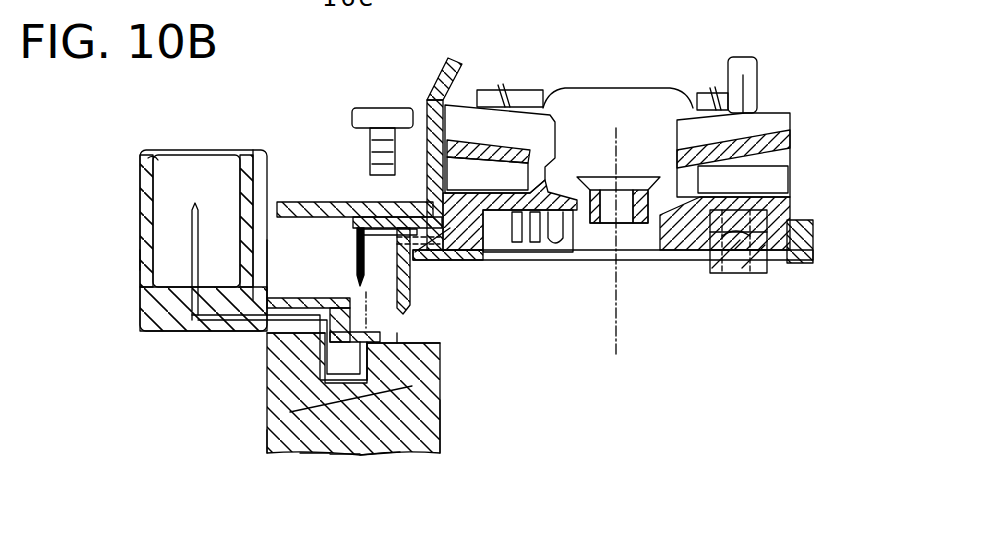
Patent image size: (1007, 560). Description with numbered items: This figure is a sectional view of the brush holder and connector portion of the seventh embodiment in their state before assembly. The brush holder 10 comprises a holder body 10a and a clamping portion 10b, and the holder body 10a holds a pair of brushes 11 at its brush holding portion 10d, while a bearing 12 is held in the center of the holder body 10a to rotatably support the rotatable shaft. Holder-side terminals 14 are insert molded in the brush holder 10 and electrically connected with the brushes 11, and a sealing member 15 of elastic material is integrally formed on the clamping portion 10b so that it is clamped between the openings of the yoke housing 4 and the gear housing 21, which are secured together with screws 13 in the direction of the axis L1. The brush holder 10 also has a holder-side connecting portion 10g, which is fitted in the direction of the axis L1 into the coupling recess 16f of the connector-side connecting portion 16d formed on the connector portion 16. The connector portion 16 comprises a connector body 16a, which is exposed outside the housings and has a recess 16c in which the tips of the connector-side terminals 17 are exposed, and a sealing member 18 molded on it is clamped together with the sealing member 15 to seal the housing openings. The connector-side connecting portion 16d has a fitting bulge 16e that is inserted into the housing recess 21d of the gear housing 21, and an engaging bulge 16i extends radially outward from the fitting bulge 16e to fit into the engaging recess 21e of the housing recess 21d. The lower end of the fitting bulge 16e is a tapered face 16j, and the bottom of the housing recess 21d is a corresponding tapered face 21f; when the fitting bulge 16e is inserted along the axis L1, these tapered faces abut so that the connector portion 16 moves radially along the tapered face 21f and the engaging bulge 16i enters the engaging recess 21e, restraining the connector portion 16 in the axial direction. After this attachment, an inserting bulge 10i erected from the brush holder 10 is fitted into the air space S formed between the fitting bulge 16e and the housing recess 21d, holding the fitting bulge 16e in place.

The yoke housing 4 is at (428, 104).
The brush holder 10 is at (758, 56).
The holder body 10a is at (782, 136).
The clamping portion 10b is at (808, 220).
The brush holding portion 10d is at (614, 88).
The holder-side connecting portion 10g is at (323, 202).
The inserting bulge 10i is at (412, 288).
The brushes 11 is at (488, 90).
The bearing 12 is at (593, 252).
The screws 13 is at (376, 106).
The holder-side terminals 14 is at (359, 269).
The sealing member 15 is at (384, 204).
The connector portion 16 is at (268, 150).
The connector body 16a is at (140, 258).
The recess 16c is at (156, 152).
The connector-side connecting portion 16d is at (430, 350).
The fitting bulge 16e is at (344, 455).
The coupling recess 16f is at (385, 332).
The engaging bulge 16i is at (268, 440).
The tapered face 16j is at (303, 454).
The connector-side terminals 17 is at (196, 210).
The sealing member 18 is at (292, 269).
The gear housing 21 is at (268, 408).
The housing recess 21d is at (439, 428).
The engaging recess 21e is at (268, 372).
The tapered face 21f is at (392, 440).
The air space S is at (434, 386).
The axis L1 is at (618, 338).